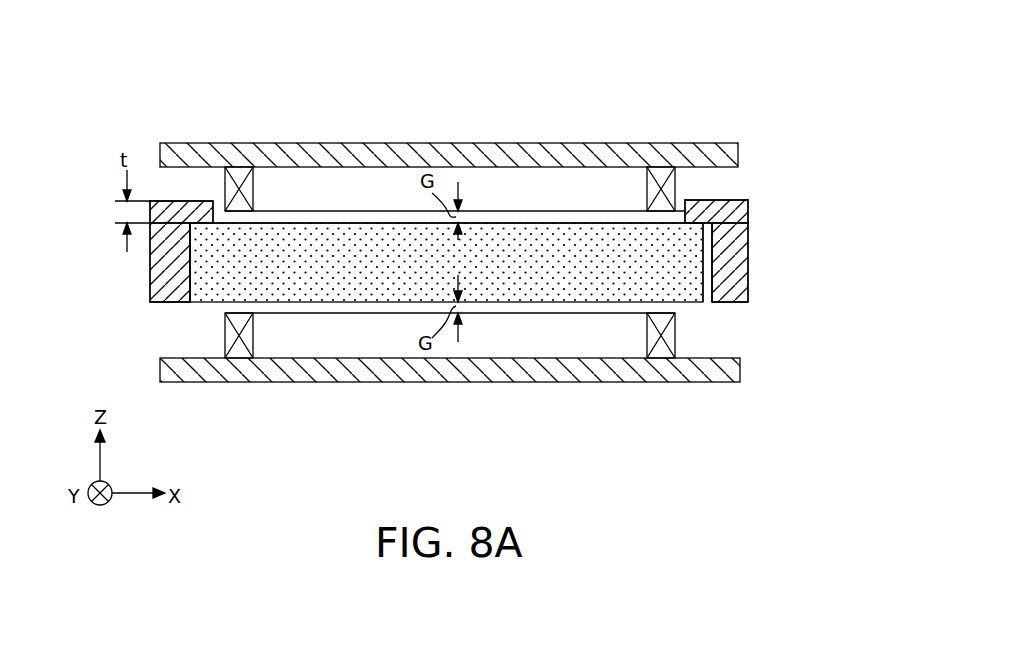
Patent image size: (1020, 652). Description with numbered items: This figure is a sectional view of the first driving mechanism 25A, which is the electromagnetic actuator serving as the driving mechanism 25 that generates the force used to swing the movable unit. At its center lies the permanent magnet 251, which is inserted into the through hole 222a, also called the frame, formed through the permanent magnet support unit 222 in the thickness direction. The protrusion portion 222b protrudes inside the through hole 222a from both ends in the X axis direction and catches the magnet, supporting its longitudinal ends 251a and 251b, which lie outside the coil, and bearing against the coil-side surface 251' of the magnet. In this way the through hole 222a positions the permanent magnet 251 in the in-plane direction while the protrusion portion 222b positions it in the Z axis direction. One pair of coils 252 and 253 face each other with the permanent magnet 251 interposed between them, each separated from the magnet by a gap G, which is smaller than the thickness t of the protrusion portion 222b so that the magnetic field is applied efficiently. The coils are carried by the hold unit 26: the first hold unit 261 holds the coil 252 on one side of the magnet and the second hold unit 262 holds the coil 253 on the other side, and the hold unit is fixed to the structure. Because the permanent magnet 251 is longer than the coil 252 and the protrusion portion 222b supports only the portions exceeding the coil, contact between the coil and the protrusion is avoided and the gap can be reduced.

The first driving mechanism 25A is at (606, 103).
The driving mechanism 25 is at (460, 253).
The hold unit 26 is at (450, 253).
The first hold unit 261 is at (413, 162).
The second hold unit 262 is at (428, 368).
The coil 252 is at (513, 187).
The coil 253 is at (567, 335).
The permanent magnet 251 is at (447, 190).
The surface of the permanent magnet on the coil side 251' is at (446, 150).
The end of the permanent magnet 251a is at (695, 252).
The end of the permanent magnet 251b is at (198, 264).
The permanent magnet support unit 222 is at (748, 206).
The through hole 222a is at (718, 274).
The protrusion portion 222b is at (206, 212).